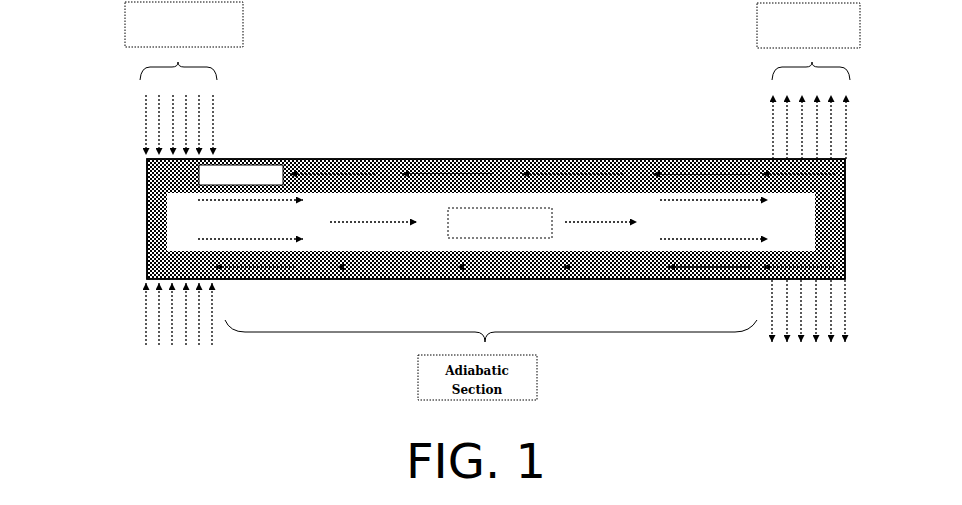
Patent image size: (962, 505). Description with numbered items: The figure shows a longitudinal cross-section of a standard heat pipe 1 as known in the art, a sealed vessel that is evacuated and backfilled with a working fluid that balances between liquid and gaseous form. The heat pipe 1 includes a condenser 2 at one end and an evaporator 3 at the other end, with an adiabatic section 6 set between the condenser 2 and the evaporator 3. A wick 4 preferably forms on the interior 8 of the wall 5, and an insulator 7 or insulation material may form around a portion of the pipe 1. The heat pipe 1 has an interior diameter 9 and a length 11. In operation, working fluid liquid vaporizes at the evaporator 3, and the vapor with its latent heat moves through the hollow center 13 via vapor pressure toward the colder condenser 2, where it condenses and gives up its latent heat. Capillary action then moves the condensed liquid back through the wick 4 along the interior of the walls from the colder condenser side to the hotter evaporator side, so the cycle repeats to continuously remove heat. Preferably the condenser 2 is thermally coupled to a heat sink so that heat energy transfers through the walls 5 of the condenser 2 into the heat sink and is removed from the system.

The heat pipe 1 is at (418, 88).
The condenser 2 is at (848, 193).
The evaporator 3 is at (145, 210).
The wick 4 is at (573, 157).
The wall 5 is at (491, 155).
The adiabatic section 6 is at (395, 150).
The insulator 7 is at (318, 155).
The interior 8 is at (669, 165).
The interior diameter 9 is at (85, 272).
The length 11 is at (838, 362).
The hollow center 13 is at (443, 150).